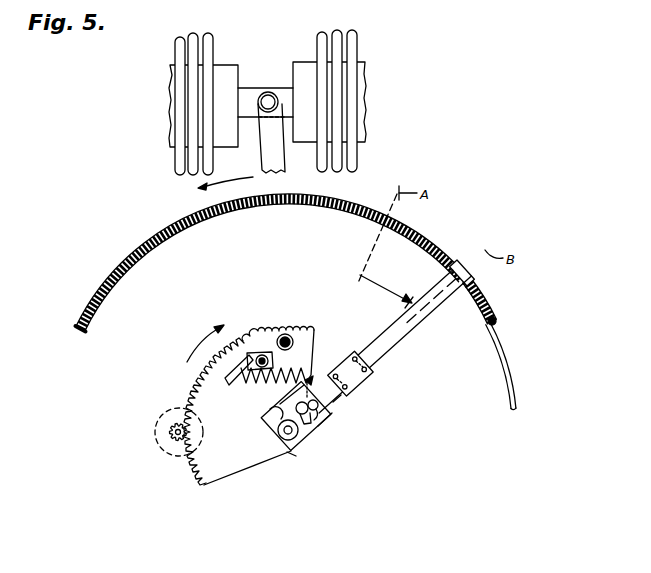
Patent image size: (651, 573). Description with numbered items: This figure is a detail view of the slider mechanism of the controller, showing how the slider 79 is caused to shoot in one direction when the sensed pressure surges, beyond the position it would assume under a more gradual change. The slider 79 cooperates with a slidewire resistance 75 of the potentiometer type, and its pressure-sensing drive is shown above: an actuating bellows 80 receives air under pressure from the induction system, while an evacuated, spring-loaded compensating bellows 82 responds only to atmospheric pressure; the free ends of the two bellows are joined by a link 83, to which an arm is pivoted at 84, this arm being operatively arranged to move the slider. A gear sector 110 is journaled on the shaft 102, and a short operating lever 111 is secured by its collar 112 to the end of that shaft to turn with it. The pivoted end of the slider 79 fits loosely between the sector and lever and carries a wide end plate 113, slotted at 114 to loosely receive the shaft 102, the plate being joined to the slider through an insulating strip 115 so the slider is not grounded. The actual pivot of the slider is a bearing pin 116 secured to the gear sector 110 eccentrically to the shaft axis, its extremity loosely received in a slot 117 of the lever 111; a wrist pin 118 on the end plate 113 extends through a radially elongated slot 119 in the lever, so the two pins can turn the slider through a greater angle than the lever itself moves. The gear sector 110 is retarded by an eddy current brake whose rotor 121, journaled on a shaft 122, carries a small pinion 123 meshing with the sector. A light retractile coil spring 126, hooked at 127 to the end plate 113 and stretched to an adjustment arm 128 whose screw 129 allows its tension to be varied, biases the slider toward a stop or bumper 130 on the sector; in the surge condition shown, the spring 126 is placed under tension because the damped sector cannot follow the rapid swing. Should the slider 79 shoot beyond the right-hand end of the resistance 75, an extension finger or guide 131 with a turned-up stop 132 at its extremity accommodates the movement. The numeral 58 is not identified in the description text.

The arm 58 is at (278, 153).
The slidewire resistance 75 is at (119, 266).
The slider 79 is at (391, 338).
The bellows 80 is at (356, 43).
The compensating bellows 82 is at (177, 47).
The link 83 is at (243, 97).
The pivot 84 is at (268, 92).
The shaft 102 is at (276, 435).
The gear sector 110 is at (198, 470).
The operating lever 111 is at (331, 416).
The collar 112 is at (291, 451).
The end plate 113 is at (338, 404).
The slot 114 is at (262, 418).
The insulating strip 115 is at (355, 384).
The bearing pin 116 is at (304, 436).
The slot 117 is at (322, 433).
The wrist pin 118 is at (329, 422).
The slot 119 is at (294, 394).
The rotor 121 is at (158, 456).
The shaft 122 is at (179, 426).
The pinion 123 is at (169, 431).
The coil spring 126 is at (246, 379).
The hook 127 is at (313, 376).
The adjustment arm 128 is at (245, 338).
The screw 129 is at (263, 355).
The stop 130 is at (297, 339).
The extension finger 131 is at (505, 353).
The stop 132 is at (516, 407).